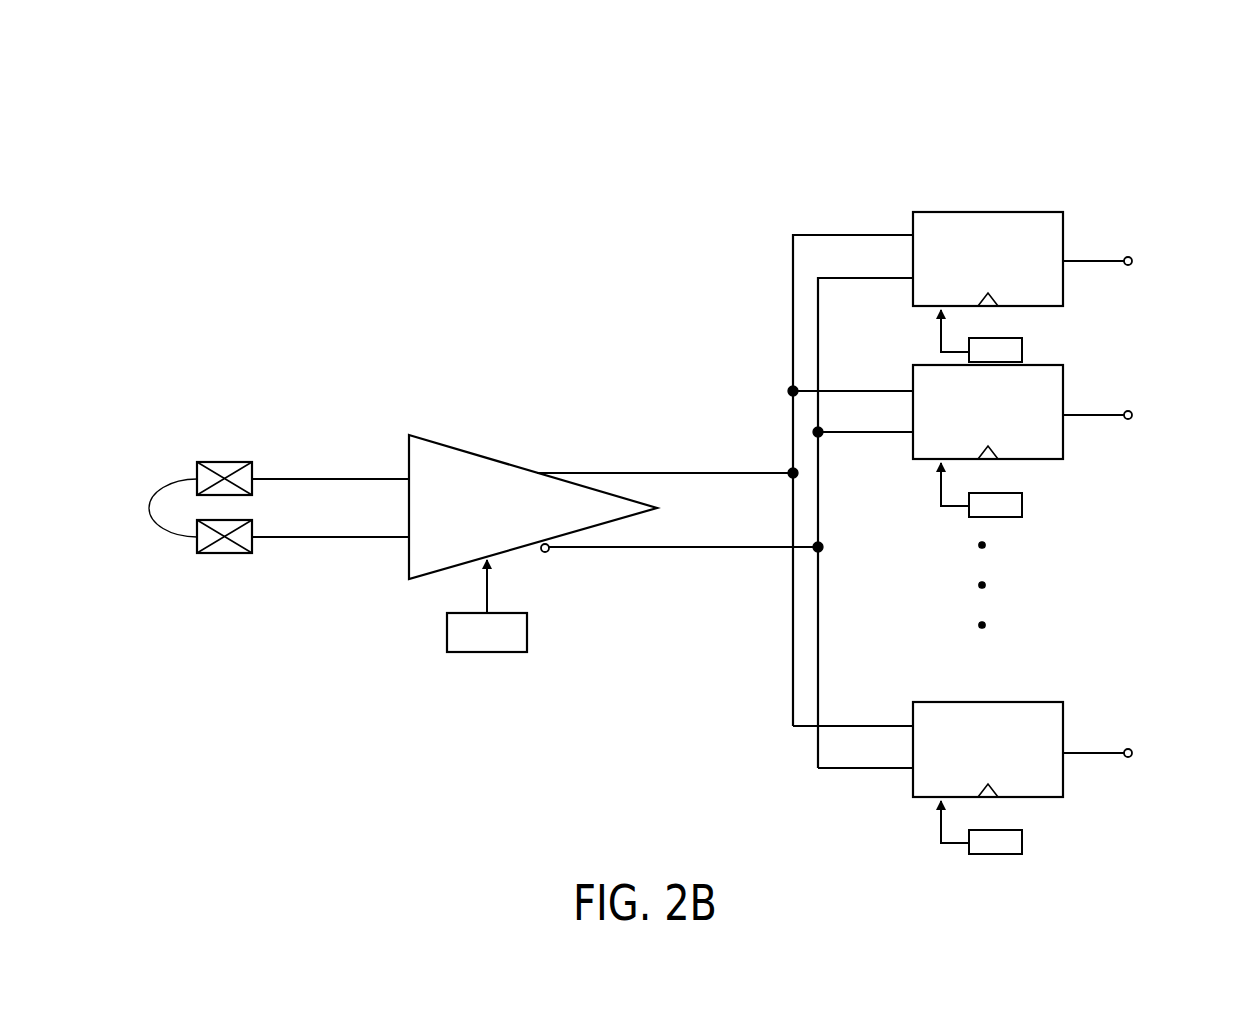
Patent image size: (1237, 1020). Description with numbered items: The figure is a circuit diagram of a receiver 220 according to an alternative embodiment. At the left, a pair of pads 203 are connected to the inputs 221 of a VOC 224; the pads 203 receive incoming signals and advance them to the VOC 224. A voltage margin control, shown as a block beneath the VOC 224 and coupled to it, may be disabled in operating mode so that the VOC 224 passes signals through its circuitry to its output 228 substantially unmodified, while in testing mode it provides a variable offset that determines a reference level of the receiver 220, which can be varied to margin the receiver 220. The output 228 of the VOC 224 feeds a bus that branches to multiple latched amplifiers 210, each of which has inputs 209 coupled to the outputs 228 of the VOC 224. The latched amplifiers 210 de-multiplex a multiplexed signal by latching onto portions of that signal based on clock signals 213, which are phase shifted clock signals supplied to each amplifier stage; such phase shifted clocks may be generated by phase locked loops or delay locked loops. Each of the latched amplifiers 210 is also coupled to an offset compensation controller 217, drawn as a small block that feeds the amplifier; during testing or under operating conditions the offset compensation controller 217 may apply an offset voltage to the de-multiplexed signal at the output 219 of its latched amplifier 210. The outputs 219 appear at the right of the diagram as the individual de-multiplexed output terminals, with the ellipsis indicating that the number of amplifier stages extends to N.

The pads 203 is at (191, 507).
The inputs 221 is at (406, 477).
The VOC 224 is at (468, 450).
The output 228 is at (745, 470).
The inputs 209 is at (912, 234).
The latched amplifiers 210 is at (985, 211).
The clock signals 213 is at (1003, 325).
The offset compensation controller 217 is at (1024, 352).
The output 219 is at (1165, 250).
The receiver 220 is at (1148, 134).